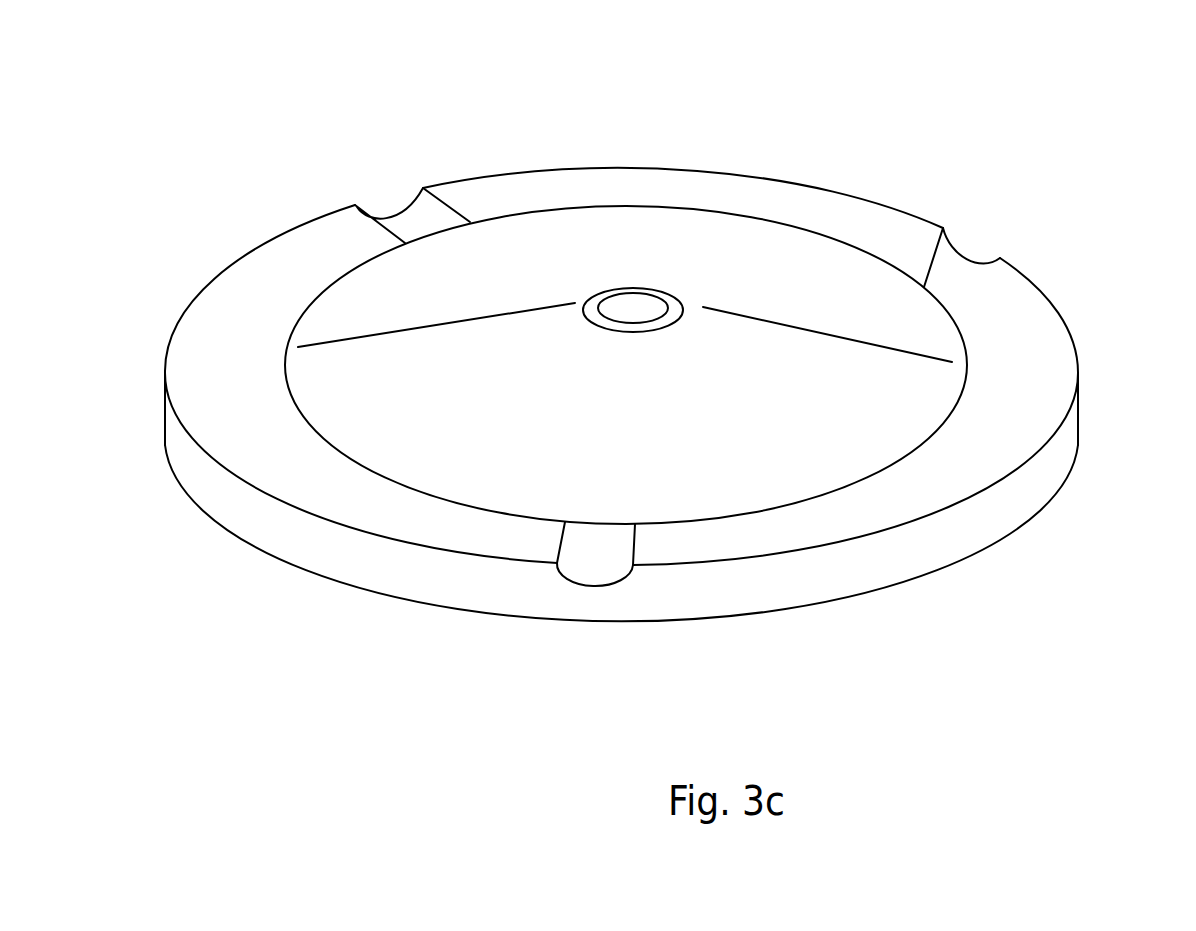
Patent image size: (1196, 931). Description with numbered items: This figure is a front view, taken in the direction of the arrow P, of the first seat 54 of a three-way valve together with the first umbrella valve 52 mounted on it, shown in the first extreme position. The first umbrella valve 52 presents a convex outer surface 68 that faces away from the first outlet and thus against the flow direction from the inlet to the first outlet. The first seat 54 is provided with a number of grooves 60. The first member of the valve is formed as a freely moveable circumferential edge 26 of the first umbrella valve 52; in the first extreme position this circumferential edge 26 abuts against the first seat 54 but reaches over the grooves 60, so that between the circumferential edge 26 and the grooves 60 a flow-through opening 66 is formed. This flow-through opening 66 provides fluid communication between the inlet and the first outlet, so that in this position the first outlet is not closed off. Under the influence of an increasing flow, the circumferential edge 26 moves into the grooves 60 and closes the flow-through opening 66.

The freely moveable circumferential edge 26 is at (671, 439).
The first umbrella valve 52 is at (709, 237).
The first seat 54 is at (1037, 345).
The grooves 60 is at (697, 416).
The flow-through opening 66 is at (585, 526).
The convex outer surface 68 is at (548, 235).
The arrow p P is at (628, 150).